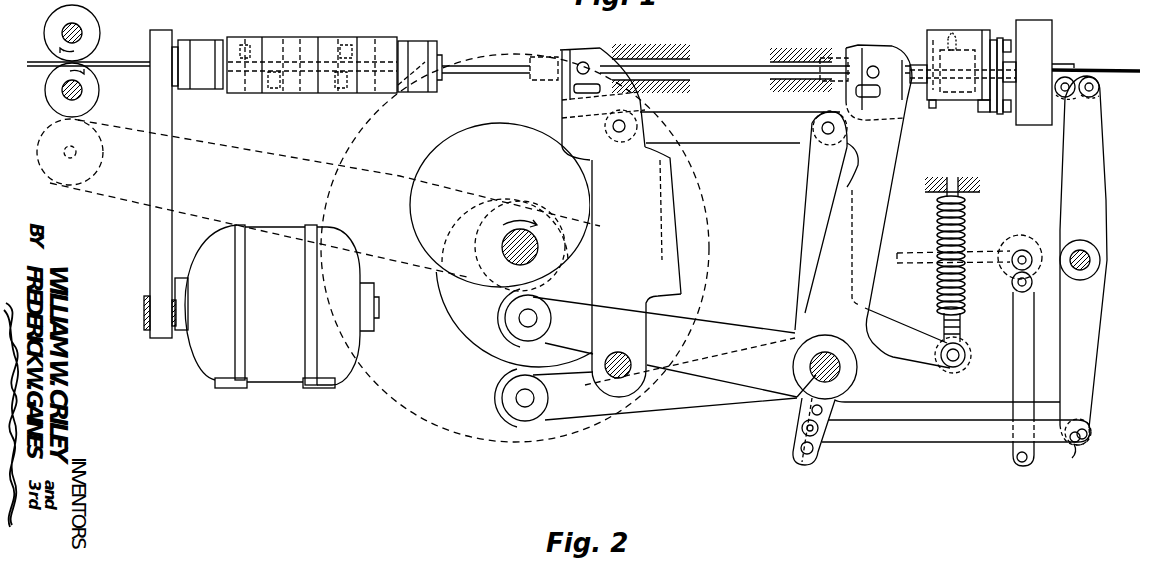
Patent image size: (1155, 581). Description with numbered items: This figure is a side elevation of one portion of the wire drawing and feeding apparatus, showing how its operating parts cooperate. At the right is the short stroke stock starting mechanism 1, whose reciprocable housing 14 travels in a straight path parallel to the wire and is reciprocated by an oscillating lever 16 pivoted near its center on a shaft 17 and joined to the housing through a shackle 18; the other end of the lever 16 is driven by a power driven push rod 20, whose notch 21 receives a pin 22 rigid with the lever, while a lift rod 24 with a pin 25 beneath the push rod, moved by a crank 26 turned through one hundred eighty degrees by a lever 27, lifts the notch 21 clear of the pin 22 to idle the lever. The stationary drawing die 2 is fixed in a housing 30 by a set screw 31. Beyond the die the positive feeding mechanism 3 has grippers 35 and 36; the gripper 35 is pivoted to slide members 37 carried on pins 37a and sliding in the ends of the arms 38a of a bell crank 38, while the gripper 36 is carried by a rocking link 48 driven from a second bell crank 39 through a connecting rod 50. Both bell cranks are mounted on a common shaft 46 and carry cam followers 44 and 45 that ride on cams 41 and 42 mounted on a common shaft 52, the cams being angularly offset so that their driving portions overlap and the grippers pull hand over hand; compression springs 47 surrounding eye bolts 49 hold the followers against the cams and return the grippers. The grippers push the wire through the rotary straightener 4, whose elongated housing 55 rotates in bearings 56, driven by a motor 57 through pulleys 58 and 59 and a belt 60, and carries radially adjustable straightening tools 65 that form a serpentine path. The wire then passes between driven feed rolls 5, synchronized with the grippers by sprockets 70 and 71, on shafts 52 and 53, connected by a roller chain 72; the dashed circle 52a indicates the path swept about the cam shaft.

The short stroke stock starting mechanism 1 is at (1062, 60).
The stationary drawing die 2 is at (982, 33).
The positive feeding mechanism 3 is at (560, 50).
The rotary straightener 4 is at (392, 30).
The driven feed rolls 5 is at (44, 33).
The reciprocable housing 14 is at (1050, 30).
The oscillating lever 16 is at (1106, 198).
The shaft 17 is at (1088, 266).
The shackle 18 is at (1067, 100).
The push rod 20 is at (936, 432).
The notch 21 is at (1093, 428).
The pin 22 is at (1085, 449).
The lift rod 24 is at (1013, 392).
The pin 25 is at (1026, 457).
The crank 26 is at (1004, 270).
The lever 27 is at (922, 264).
The housing 30 is at (933, 100).
The set screw 31 is at (952, 32).
The gripper 35 is at (836, 60).
The gripper 36 is at (626, 62).
The slide members 37 is at (880, 60).
The pins 37a is at (867, 153).
The bell crank 38 is at (712, 328).
The arms 38a is at (878, 226).
The bell crank 39 is at (808, 198).
The cam 41 is at (412, 224).
The cam 42 is at (468, 326).
The cam follower 44 is at (510, 304).
The cam follower 45 is at (502, 404).
The common shaft 46 is at (796, 398).
The compression springs 47 is at (962, 235).
The rocking link 48 is at (665, 215).
The eye bolts 49 is at (964, 349).
The connecting rod 50 is at (718, 118).
The common shaft 52 is at (508, 250).
The path circle 52a is at (418, 395).
The shaft 53 is at (72, 156).
The housing 55 is at (300, 40).
The bearings 56 is at (200, 40).
The motor 57 is at (200, 350).
The pulley 58 is at (150, 36).
The pulley 59 is at (146, 296).
The belt 60 is at (172, 125).
The straightening tools 65 is at (306, 94).
The sprocket 70 is at (480, 228).
The sprocket 71 is at (40, 164).
The roller chain 72 is at (254, 150).